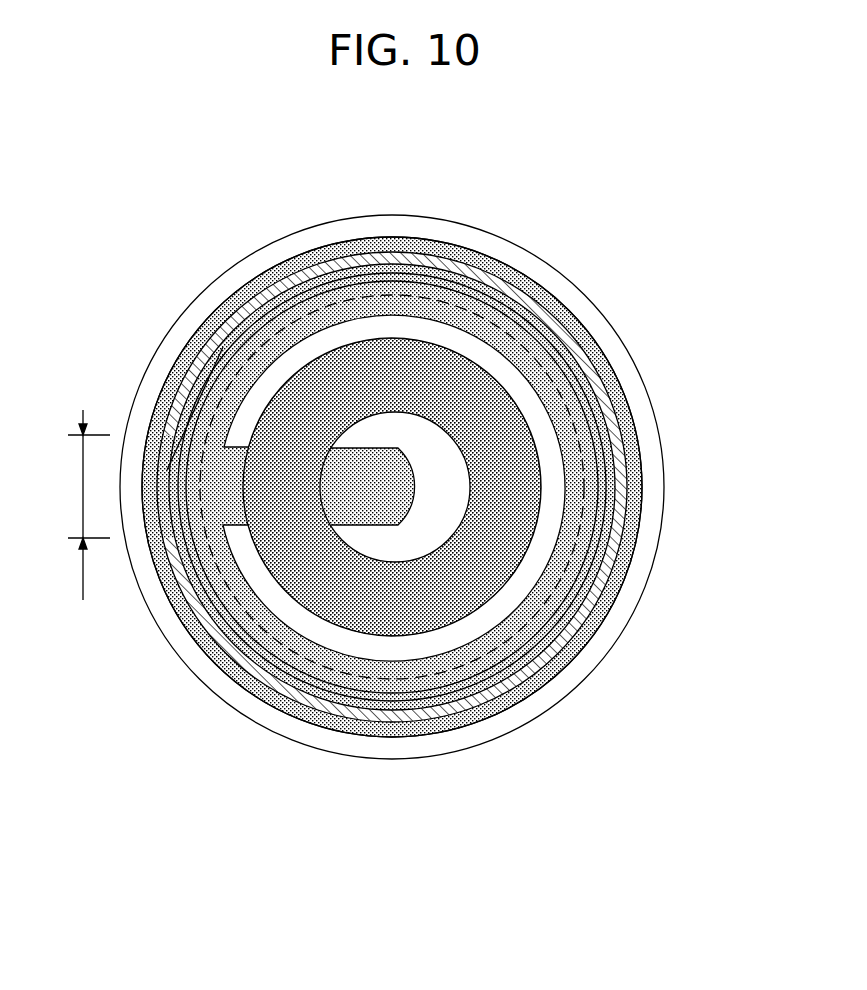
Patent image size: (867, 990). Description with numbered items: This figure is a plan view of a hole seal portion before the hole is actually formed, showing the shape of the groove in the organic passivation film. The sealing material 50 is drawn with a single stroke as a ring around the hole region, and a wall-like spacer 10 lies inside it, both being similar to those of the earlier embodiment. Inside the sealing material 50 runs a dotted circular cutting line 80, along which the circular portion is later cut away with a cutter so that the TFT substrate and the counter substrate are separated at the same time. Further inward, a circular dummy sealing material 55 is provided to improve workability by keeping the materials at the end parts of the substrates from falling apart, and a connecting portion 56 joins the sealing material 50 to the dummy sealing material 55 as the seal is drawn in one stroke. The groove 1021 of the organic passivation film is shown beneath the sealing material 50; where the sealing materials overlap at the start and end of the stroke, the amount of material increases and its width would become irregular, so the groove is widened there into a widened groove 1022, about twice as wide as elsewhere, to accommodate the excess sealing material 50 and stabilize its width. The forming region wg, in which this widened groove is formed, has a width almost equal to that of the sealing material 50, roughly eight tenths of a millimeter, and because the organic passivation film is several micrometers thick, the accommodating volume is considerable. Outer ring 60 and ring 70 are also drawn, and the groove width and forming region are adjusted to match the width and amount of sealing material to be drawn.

The wall-like spacer 10 is at (520, 282).
The sealing material 50 is at (568, 303).
The dummy sealing material 55 is at (375, 347).
The connecting portion 56 is at (236, 465).
The rotor 60 is at (657, 402).
The friction member 70 is at (498, 620).
The cutting line 80 is at (580, 353).
The groove of the organic passivation film 1021 is at (470, 270).
The gap 1022 is at (175, 462).
The forming region wg is at (78, 505).